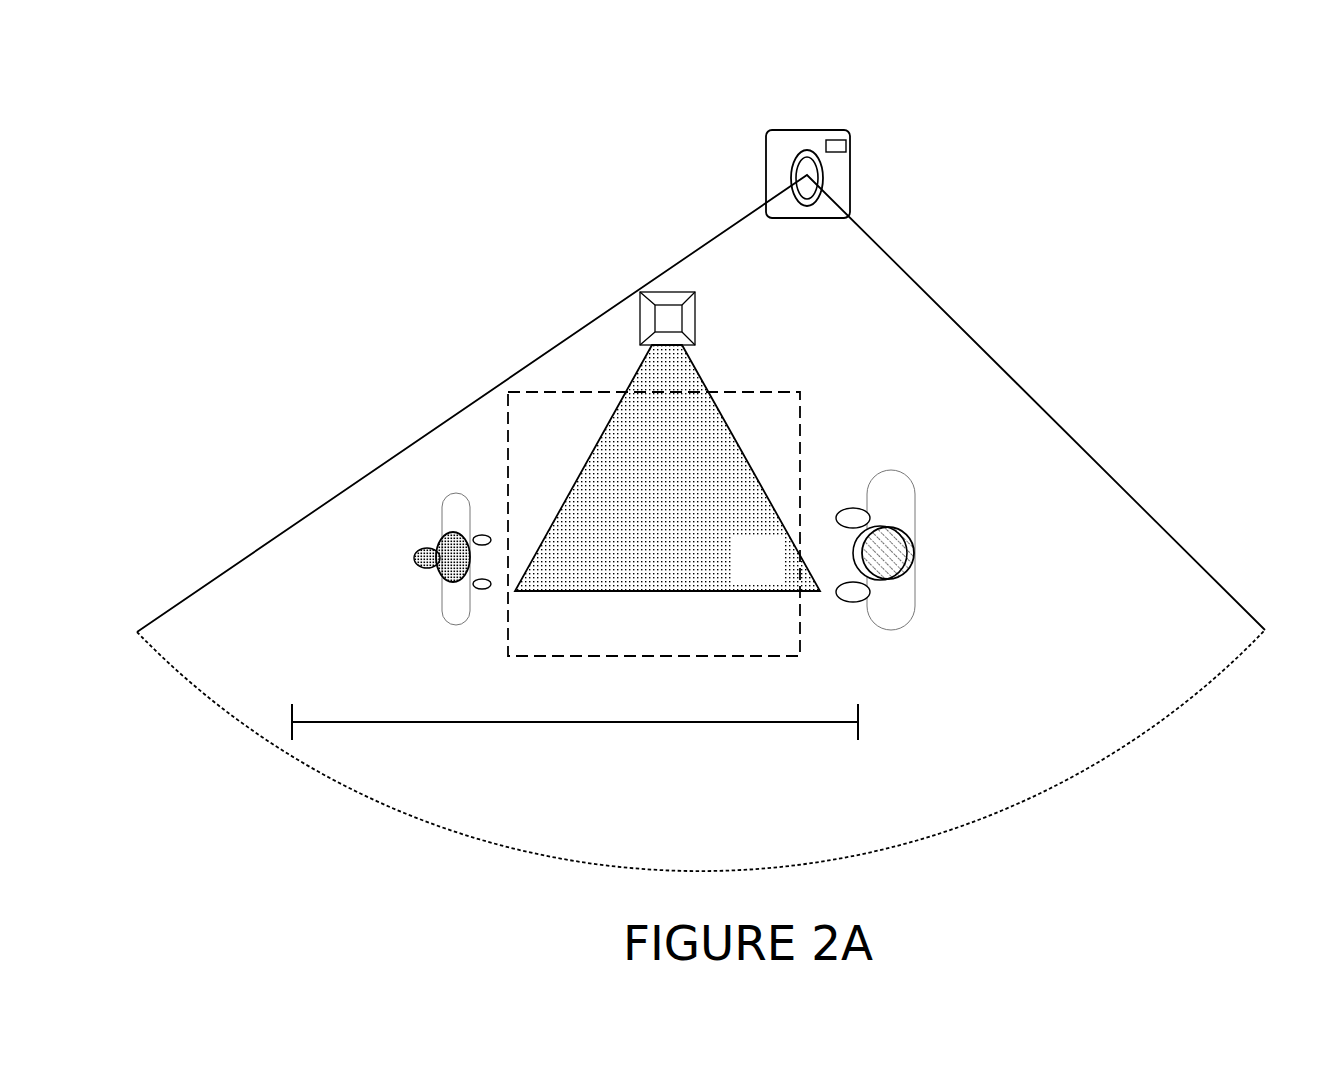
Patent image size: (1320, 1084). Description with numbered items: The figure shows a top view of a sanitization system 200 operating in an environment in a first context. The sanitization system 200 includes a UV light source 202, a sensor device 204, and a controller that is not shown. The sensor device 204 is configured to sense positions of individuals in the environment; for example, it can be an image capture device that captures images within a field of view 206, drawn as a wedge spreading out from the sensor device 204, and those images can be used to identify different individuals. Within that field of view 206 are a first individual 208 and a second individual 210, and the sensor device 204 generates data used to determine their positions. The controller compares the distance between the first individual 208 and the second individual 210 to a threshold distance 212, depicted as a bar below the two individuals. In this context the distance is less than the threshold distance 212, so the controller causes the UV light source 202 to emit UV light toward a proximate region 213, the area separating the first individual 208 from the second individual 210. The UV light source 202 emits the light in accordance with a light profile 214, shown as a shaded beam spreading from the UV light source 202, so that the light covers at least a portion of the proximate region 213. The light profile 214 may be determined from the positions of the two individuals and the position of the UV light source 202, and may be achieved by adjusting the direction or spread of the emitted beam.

The sanitization system 200 is at (271, 92).
The UV light source 202 is at (695, 335).
The sensor device 204 is at (851, 190).
The field of view 206 is at (1062, 434).
The first individual 208 is at (443, 507).
The second individual 210 is at (872, 476).
The threshold distance 212 is at (725, 723).
The proximate region 213 is at (562, 643).
The light profile 214 is at (777, 573).